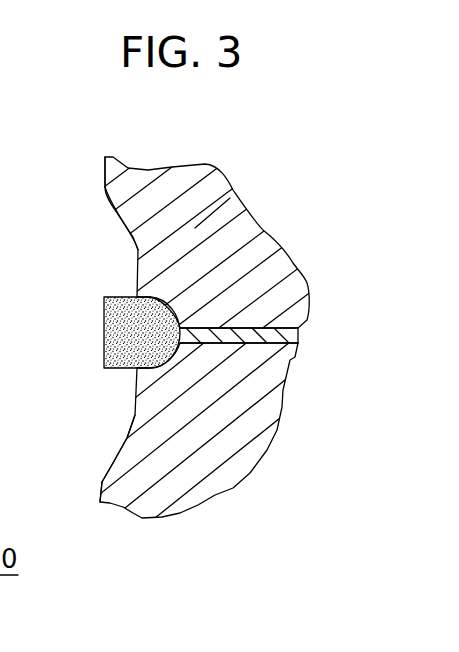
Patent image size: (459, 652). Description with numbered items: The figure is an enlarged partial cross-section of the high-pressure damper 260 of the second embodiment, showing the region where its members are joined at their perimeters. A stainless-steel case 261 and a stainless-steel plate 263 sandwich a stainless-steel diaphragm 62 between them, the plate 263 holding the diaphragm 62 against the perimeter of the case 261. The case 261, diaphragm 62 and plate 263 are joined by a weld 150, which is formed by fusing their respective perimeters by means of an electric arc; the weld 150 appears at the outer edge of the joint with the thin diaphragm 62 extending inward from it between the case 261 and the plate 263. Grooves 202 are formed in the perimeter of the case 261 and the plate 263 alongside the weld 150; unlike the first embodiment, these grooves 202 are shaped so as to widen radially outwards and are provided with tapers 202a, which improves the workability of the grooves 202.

The high-pressure damper 260 is at (292, 188).
The case 261 is at (232, 190).
The plate 263 is at (243, 412).
The diaphragm 62 is at (240, 323).
The weld 150 is at (104, 340).
The grooves 202 is at (137, 272).
The tapers 202a is at (117, 215).